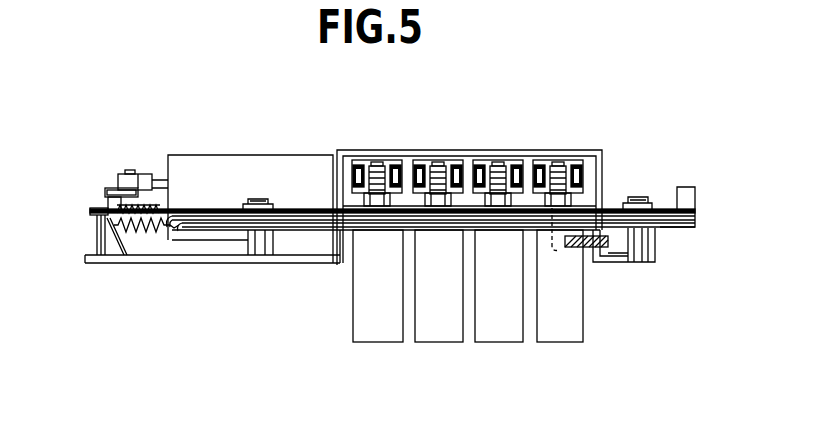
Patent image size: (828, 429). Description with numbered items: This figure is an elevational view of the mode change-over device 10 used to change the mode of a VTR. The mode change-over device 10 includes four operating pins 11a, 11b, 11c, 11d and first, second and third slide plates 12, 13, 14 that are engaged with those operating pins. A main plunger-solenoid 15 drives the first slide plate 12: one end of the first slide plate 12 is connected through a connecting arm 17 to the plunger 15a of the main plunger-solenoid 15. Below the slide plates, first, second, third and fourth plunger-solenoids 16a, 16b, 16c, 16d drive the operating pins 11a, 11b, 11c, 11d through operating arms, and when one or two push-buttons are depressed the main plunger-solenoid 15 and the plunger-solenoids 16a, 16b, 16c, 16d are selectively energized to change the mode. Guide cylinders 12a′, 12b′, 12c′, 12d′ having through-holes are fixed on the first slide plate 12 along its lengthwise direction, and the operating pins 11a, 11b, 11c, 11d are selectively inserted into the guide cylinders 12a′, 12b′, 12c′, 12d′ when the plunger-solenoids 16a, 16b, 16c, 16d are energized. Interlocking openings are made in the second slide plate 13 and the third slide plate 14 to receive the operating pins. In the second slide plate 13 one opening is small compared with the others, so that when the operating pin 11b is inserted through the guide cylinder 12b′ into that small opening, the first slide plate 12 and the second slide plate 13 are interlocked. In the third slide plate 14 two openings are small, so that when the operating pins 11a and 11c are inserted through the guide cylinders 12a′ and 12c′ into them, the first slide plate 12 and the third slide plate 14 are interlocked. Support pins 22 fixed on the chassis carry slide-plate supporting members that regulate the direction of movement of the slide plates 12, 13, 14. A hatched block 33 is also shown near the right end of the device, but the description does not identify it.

The mode change-over device 10 is at (210, 323).
The connecting arm 17 is at (112, 187).
The plunger 15a is at (150, 178).
The main plunger-solenoid 15 is at (248, 163).
The first slide plate 12 is at (186, 211).
The second slide plate 13 is at (200, 224).
The third slide plate 14 is at (228, 225).
The support pins 22 is at (253, 259).
The operating pin 11a is at (387, 177).
The operating pin 11b is at (446, 177).
The operating pin 11c is at (508, 177).
The operating pin 11d is at (565, 177).
The guide cylinder 12a′ is at (376, 205).
The guide cylinder 12b′ is at (434, 205).
The guide cylinder 12c′ is at (494, 205).
The guide cylinder 12d′ is at (556, 208).
The hatched stop block 33 is at (602, 248).
The first plunger-solenoid 16a is at (383, 330).
The second plunger-solenoid 16b is at (447, 328).
The third plunger-solenoid 16c is at (503, 328).
The fourth plunger-solenoid 16d is at (563, 327).